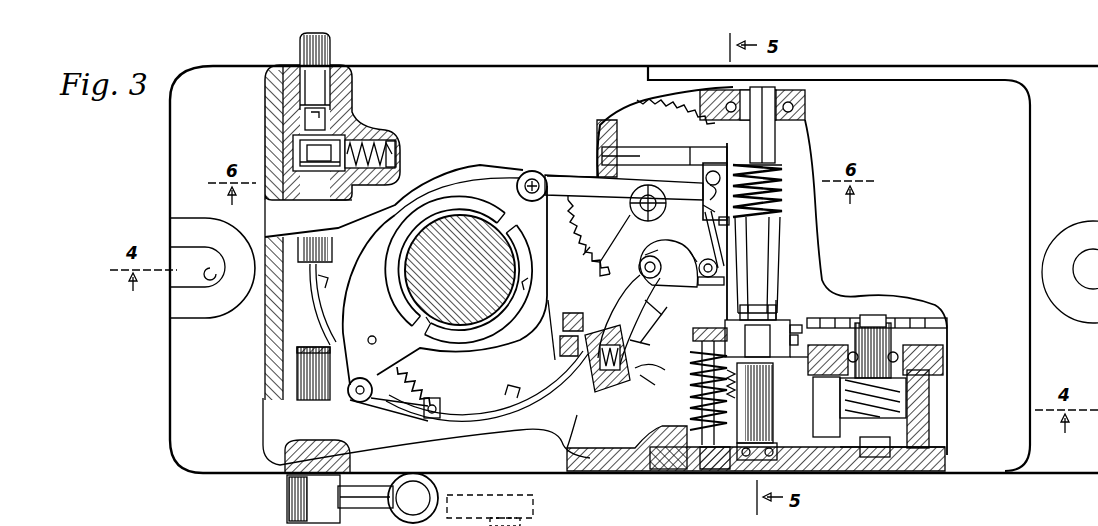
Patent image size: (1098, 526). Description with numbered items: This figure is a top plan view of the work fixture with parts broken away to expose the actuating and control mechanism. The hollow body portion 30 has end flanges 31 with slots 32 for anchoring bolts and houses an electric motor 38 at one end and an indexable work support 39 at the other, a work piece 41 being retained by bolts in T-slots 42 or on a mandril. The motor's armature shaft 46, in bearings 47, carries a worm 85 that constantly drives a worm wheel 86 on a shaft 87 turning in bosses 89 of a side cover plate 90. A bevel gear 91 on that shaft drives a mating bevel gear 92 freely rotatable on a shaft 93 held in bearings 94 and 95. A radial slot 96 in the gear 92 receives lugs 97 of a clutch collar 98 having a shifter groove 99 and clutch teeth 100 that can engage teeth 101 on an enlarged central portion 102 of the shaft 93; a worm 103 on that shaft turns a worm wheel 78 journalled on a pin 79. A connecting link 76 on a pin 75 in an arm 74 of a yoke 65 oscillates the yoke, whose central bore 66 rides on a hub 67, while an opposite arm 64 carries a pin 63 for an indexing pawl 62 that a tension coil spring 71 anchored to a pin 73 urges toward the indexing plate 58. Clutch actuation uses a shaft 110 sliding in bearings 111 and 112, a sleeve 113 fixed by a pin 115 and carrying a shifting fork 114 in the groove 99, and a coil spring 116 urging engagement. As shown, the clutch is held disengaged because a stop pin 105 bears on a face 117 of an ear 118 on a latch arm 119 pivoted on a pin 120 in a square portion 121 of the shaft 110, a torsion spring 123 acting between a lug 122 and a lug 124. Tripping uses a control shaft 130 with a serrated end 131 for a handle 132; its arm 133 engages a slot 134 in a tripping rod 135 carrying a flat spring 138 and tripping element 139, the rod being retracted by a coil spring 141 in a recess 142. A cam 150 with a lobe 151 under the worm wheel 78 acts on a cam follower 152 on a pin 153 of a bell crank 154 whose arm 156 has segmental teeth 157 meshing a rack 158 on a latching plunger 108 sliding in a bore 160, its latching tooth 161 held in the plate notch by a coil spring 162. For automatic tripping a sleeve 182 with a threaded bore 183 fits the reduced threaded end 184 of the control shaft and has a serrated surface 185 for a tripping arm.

The body portion 30 is at (500, 64).
The end flanges 31 is at (1034, 131).
The slots 32 is at (218, 280).
The electric motor 38 is at (898, 301).
The indexable work support 39 is at (448, 232).
The work piece 41 is at (523, 500).
The T-slots 42 is at (523, 520).
The armature shaft 46 is at (893, 336).
The bearings 47 is at (858, 343).
The indexing plate 58 is at (482, 398).
The indexing pawl 62 is at (412, 412).
The pin 63 is at (364, 380).
The arm 64 is at (352, 392).
The yoke 65 is at (520, 322).
The central bore 66 is at (526, 288).
The hub 67 is at (477, 324).
The tension coil spring 71 is at (420, 384).
The pin 73 is at (375, 337).
The arm 74 is at (545, 233).
The pin 75 is at (547, 186).
The connecting link 76 is at (585, 185).
The worm wheel 78 is at (592, 245).
The pin 79 is at (640, 203).
The worm 85 is at (910, 395).
The worm wheel 86 is at (878, 465).
The shaft 87 is at (930, 425).
The bosses 89 is at (801, 355).
The side cover plate 90 is at (820, 477).
The bevel gear 91 is at (775, 400).
The bevel gear 92 is at (755, 392).
The shaft 93 is at (746, 470).
The bearing 94 is at (805, 100).
The bearing 95 is at (720, 468).
The radially disposed slot 96 is at (752, 335).
The lugs 97 is at (752, 349).
The clutch collar 98 is at (790, 332).
The shifter fork receiving groove 99 is at (795, 343).
The clutch teeth 100 is at (778, 300).
The clutch teeth 101 is at (752, 300).
The enlarged central portion 102 is at (768, 258).
The worm 103 is at (784, 190).
The stop pin 105 is at (706, 176).
The latching plunger 108 is at (585, 358).
The shaft 110 is at (694, 407).
The bearing 111 is at (690, 425).
The bearing 112 is at (667, 289).
The sleeve member 113 is at (710, 420).
The clutch shifting fork 114 is at (759, 305).
The pin 115 is at (693, 334).
The coil spring 116 is at (700, 380).
The abutment face 117 is at (705, 190).
The ear 118 is at (706, 206).
The latch arm 119 is at (735, 170).
The pin 120 is at (718, 268).
The square portion 121 is at (735, 150).
The lug 122 is at (730, 220).
The coil torsion spring 123 is at (705, 232).
The lug 124 is at (713, 287).
The control shaft 130 is at (311, 399).
The serrated outer end 131 is at (290, 520).
The operating handle 132 is at (362, 492).
The trip rod operating arm 133 is at (300, 135).
The slot 134 is at (308, 150).
The tripping rod 135 is at (394, 150).
The flat spring element 138 is at (650, 158).
The tripping element 139 is at (703, 150).
The coil spring 141 is at (368, 140).
The recess 142 is at (352, 186).
The cam 150 is at (665, 252).
The lobe 151 is at (690, 254).
The cam follower 152 is at (645, 258).
The pin 153 is at (650, 290).
The bell crank 154 is at (660, 302).
The arm 156 is at (666, 310).
The segmental gear teeth 157 is at (665, 378).
The rack 158 is at (640, 358).
The bore 160 is at (590, 327).
The latching tooth 161 is at (570, 340).
The coil spring 162 is at (615, 358).
The tripping sleeve 182 is at (322, 66).
The threaded axial bore 183 is at (352, 98).
The reduced threaded end 184 is at (305, 112).
The serrated surface 185 is at (328, 48).